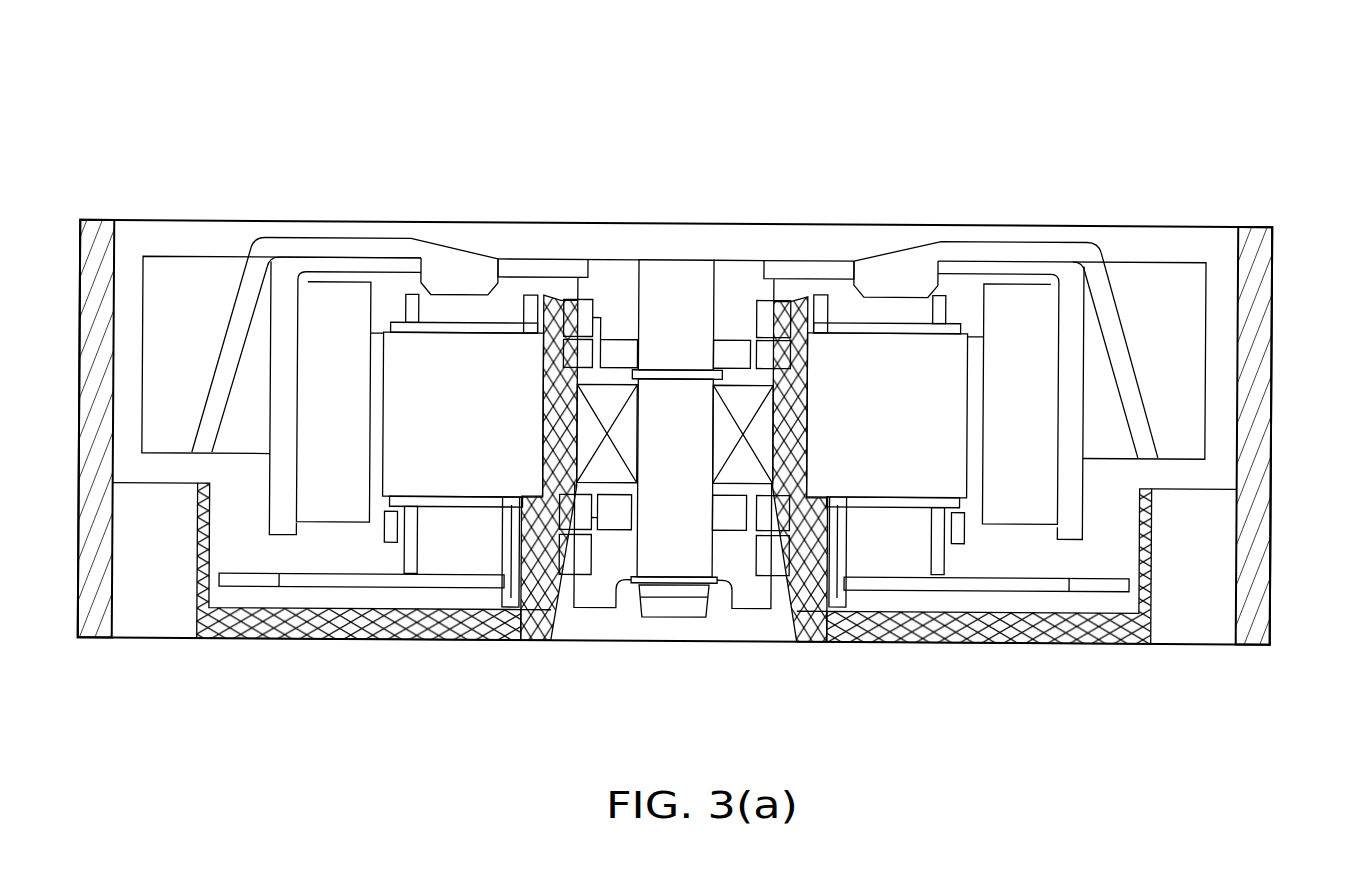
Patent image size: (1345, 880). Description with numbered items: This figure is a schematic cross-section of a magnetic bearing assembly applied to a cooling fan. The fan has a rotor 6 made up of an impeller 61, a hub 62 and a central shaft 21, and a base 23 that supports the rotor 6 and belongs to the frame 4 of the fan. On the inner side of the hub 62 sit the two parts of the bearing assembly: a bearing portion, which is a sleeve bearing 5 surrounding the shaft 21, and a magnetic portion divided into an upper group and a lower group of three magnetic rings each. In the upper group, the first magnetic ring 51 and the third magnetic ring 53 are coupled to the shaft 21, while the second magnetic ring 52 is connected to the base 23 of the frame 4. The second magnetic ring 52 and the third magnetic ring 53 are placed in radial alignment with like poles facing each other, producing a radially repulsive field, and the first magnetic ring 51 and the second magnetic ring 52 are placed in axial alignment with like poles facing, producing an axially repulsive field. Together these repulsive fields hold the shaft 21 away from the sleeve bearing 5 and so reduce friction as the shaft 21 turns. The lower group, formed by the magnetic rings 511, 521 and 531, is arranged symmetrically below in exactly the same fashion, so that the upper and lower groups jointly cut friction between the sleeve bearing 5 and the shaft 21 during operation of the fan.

The frame 4 is at (1255, 360).
The sleeve bearing 5 is at (675, 393).
The rotor 6 is at (1036, 237).
The shaft 21 is at (670, 283).
The base 23 is at (807, 432).
The first magnetic ring 51 is at (760, 307).
The second magnetic ring 52 is at (702, 397).
The third magnetic ring 53 is at (727, 340).
The impeller 61 is at (1176, 290).
The hub 62 is at (1130, 355).
The first magnetic ring of the lower magnetic portion 511 is at (762, 560).
The second magnetic ring of the lower magnetic portion 521 is at (786, 530).
The third magnetic ring of the lower magnetic portion 531 is at (725, 513).